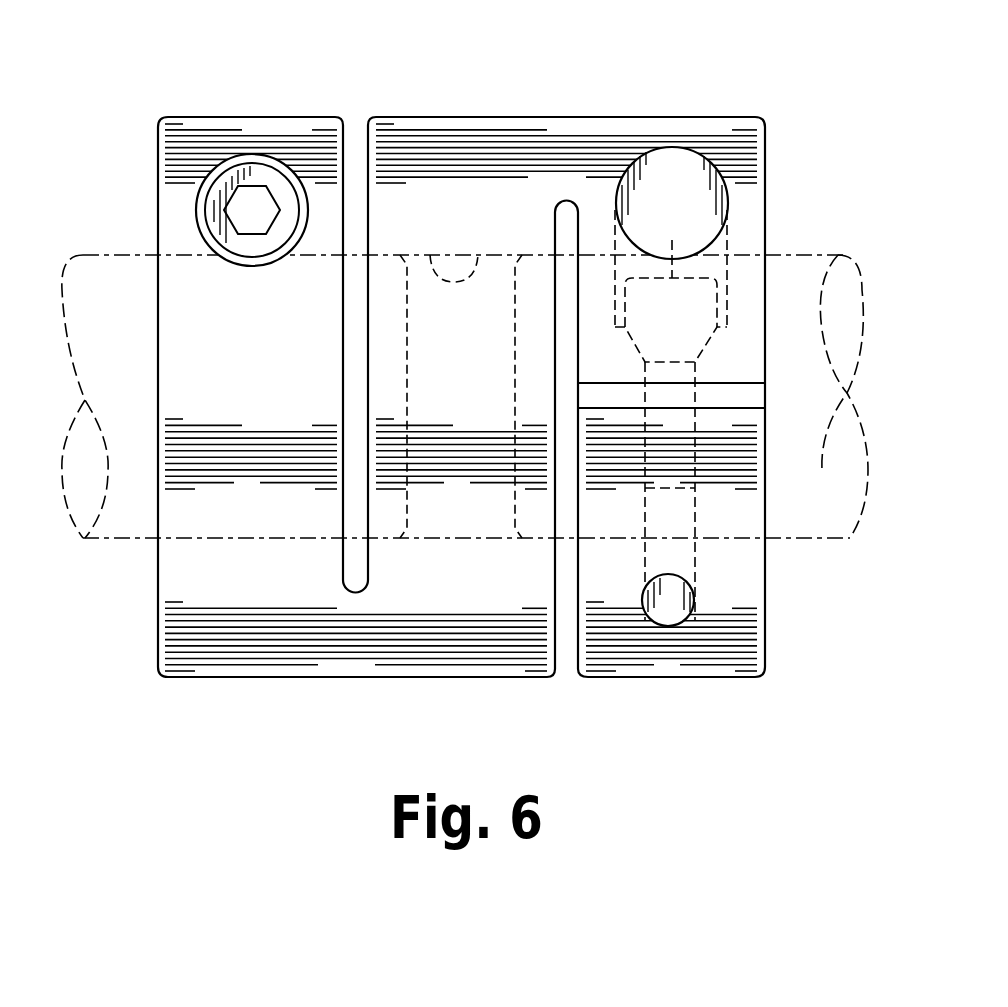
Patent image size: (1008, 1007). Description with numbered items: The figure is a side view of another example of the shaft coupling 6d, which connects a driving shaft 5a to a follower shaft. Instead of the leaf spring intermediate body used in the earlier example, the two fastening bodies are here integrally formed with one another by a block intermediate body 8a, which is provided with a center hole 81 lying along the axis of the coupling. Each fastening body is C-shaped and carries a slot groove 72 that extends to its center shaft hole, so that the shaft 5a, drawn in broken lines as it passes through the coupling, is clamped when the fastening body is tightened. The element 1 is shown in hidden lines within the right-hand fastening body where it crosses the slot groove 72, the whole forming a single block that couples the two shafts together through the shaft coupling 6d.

The shaft coupling 6d is at (772, 95).
The block intermediate body 8a is at (448, 132).
The shaft 5a is at (105, 262).
The center hole 81 is at (470, 272).
The screw member 1 is at (672, 245).
The slot groove 72 is at (745, 397).